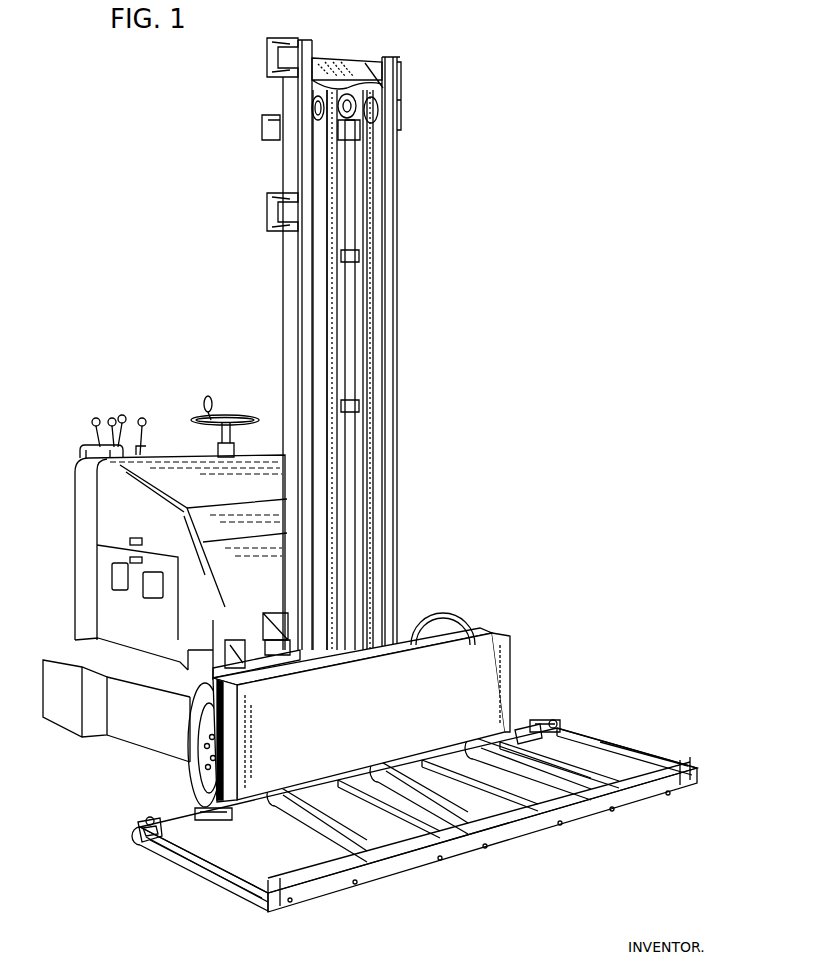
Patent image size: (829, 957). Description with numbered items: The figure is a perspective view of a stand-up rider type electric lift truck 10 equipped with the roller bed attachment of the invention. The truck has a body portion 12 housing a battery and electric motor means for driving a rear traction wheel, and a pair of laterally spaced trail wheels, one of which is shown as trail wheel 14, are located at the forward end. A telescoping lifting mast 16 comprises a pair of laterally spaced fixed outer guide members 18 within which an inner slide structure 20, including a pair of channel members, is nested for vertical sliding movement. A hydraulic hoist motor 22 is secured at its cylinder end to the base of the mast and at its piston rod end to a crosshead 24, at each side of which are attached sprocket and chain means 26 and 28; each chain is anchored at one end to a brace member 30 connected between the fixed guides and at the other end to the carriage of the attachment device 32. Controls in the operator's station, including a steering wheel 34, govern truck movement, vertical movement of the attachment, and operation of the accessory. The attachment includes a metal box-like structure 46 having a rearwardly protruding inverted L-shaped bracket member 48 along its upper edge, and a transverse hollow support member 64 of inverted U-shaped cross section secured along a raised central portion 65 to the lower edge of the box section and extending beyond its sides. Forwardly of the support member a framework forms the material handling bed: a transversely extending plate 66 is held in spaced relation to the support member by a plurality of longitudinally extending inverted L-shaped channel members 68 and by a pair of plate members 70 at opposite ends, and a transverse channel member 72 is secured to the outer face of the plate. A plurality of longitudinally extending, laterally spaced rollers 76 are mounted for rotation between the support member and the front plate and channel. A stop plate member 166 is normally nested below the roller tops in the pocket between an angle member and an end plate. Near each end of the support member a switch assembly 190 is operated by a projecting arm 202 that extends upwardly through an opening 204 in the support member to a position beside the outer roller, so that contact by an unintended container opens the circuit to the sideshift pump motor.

The lift truck 10 is at (164, 581).
The body portion 12 is at (122, 624).
The trail wheel 14 is at (203, 760).
The telescoping lifting mast 16 is at (341, 328).
The fixed outer guide members 18 is at (288, 282).
The inner slide structure 20 is at (341, 58).
The hydraulic hoist motor 22 is at (347, 232).
The crosshead 24 is at (392, 70).
The sprocket means 26 is at (316, 108).
The chain means 28 is at (343, 138).
The brace member 30 is at (329, 165).
The attachment device 32 is at (522, 664).
The steering wheel 34 is at (237, 416).
The box-like structure 46 is at (374, 732).
The inverted L-shaped bracket member 48 is at (212, 680).
The hollow support member 64 is at (140, 836).
The raised central portion 65 is at (401, 807).
The transversely extending plate 66 is at (544, 808).
The inverted L-shaped channel members 68 is at (416, 828).
The plate members 70 is at (283, 893).
The transverse channel member 72 is at (345, 885).
The rollers 76 is at (212, 878).
The stop plate member 166 is at (190, 868).
The switch assembly 190 is at (224, 806).
The projecting arm 202 is at (148, 818).
The opening 204 is at (148, 830).